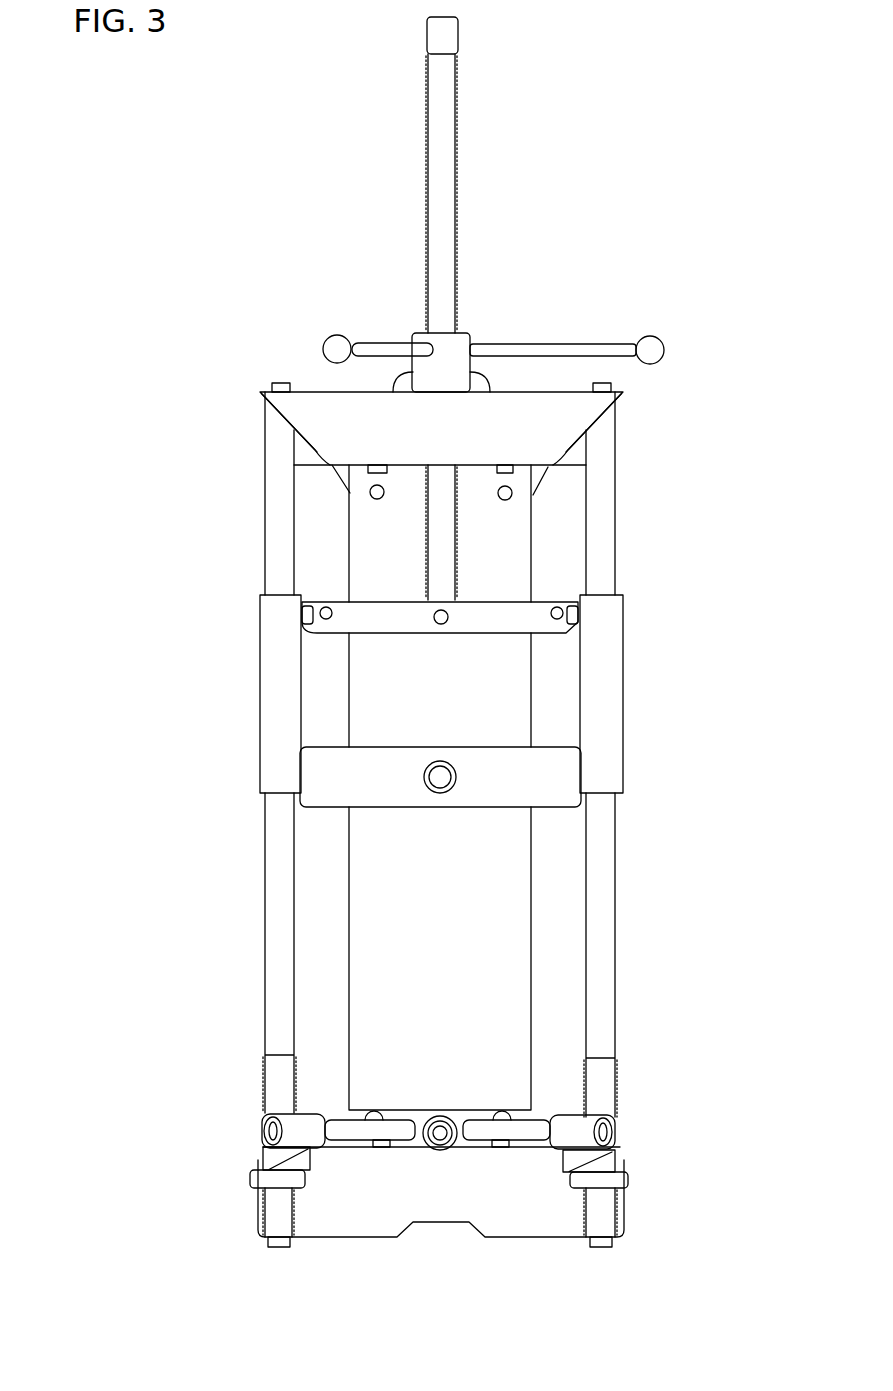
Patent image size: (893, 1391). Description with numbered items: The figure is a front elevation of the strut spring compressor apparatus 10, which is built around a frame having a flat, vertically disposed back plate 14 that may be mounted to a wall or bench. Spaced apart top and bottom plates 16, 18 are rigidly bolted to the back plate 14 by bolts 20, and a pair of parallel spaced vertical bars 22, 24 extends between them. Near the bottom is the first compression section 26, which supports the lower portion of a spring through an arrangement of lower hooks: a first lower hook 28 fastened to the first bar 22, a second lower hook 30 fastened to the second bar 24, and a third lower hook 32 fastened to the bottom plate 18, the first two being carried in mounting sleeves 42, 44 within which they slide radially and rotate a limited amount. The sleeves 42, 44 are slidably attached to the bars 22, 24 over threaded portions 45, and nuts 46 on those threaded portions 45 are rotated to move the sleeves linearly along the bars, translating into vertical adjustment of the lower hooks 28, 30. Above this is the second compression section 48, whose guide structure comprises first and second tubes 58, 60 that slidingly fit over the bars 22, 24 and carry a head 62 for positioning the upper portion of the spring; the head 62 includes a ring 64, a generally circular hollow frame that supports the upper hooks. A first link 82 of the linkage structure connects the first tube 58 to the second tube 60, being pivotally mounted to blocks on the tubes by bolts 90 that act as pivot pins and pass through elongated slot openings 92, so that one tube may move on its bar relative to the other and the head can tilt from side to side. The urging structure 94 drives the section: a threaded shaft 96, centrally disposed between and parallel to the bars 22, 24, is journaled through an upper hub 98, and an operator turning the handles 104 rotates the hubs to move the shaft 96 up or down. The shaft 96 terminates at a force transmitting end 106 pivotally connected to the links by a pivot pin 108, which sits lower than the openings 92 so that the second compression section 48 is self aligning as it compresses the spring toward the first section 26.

The apparatus 10 is at (222, 244).
The back plate 14 is at (447, 958).
The top plate 16 is at (618, 395).
The bottom plate 18 is at (348, 1210).
The bolts 20 is at (377, 500).
The first parallel bar 22 is at (273, 933).
The second parallel bar 24 is at (605, 938).
The first compression section 26 is at (205, 1093).
The first lower hook 28 is at (353, 1130).
The second lower hook 30 is at (517, 1130).
The third lower hook 32 is at (437, 1150).
The first mounting sleeve 42 is at (303, 1130).
The second mounting sleeve 44 is at (582, 1125).
The threaded portions 45 is at (278, 1217).
The nuts 46 is at (263, 1180).
The second compression section 48 is at (200, 625).
The first tube 58 is at (275, 683).
The second tube 60 is at (610, 690).
The head 62 is at (422, 826).
The ring 64 is at (492, 790).
The first link 82 is at (385, 617).
The bolts 90 is at (326, 607).
The openings 92 is at (313, 612).
The urging structure 94 is at (402, 140).
The threaded shaft 96 is at (442, 158).
The upper hub 98 is at (457, 367).
The handles 104 is at (545, 348).
The force transmitting end 106 is at (460, 598).
The pivot pin 108 is at (441, 625).